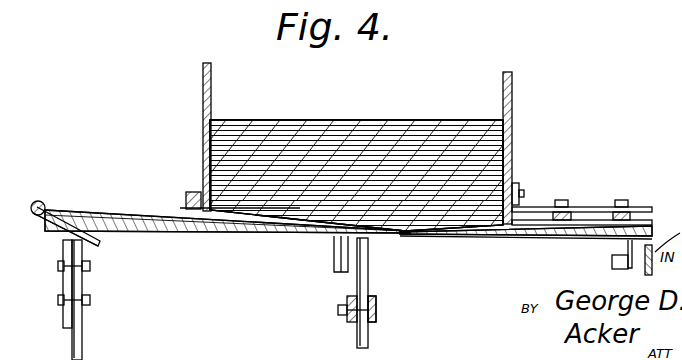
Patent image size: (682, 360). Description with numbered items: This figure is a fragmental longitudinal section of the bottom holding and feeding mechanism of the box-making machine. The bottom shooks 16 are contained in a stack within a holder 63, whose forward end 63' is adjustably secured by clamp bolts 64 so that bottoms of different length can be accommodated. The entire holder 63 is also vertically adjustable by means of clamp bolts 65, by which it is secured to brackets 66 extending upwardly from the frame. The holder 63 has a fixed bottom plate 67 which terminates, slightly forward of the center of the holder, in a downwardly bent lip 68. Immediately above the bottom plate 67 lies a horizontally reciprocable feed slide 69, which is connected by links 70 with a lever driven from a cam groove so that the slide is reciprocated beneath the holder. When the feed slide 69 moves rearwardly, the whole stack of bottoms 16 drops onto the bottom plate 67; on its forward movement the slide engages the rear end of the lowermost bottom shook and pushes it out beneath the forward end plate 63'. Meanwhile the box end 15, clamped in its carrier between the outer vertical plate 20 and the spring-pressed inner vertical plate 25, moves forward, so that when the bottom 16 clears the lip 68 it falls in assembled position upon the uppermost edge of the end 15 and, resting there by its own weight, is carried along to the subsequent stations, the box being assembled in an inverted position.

The bottom shook 16 is at (381, 121).
The holder 63 is at (183, 137).
The forward end of the holder 63' is at (537, 145).
The clamp bolts 64 is at (622, 200).
The clamp bolts 65 is at (88, 275).
The brackets 66 is at (82, 342).
The fixed bottom plate 67 is at (236, 236).
The downwardly bent lip 68 is at (408, 235).
The feed slide 69 is at (180, 232).
The links 70 is at (99, 244).
The end shook 15 is at (368, 281).
The vertical plate 20 is at (370, 308).
The inner vertical plate 25 is at (377, 322).